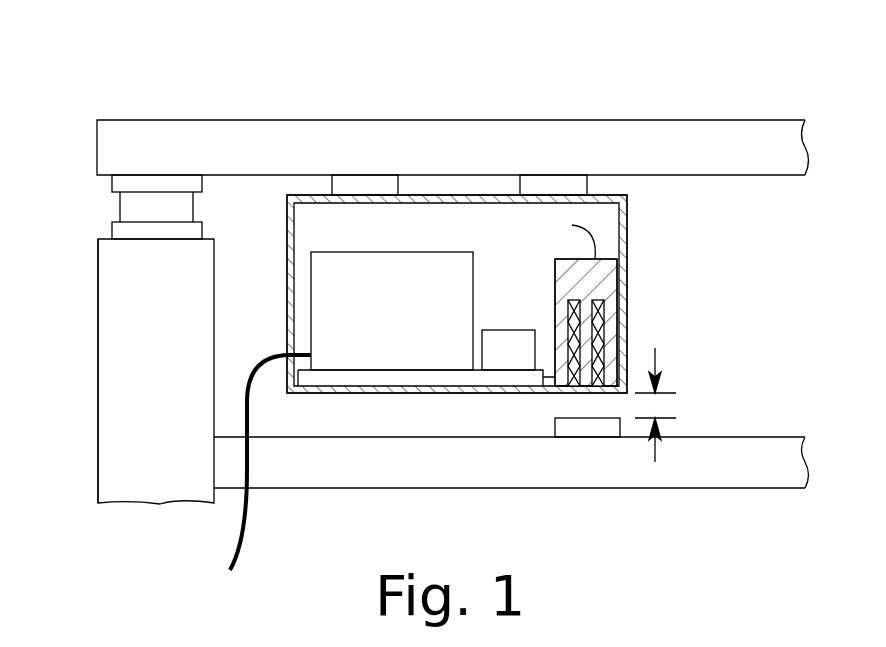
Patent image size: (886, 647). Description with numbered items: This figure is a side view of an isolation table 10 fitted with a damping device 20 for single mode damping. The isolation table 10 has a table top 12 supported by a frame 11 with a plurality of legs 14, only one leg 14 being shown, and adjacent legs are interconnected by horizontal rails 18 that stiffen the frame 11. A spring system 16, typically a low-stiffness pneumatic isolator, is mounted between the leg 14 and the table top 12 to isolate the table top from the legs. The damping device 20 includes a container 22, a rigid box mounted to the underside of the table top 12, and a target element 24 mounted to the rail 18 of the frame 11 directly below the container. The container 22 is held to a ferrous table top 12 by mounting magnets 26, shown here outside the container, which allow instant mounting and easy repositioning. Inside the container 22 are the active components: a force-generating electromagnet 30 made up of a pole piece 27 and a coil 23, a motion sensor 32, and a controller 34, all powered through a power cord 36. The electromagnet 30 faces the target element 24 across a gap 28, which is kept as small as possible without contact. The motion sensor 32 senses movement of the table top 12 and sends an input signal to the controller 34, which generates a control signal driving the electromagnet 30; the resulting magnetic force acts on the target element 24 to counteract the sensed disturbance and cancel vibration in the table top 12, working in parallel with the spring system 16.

The isolation table 10 is at (138, 104).
The frame 11 is at (96, 300).
The table top 12 is at (205, 118).
The leg 14 is at (115, 378).
The spring system 16 is at (132, 209).
The horizontal rail 18 is at (358, 475).
The damping device 20 is at (700, 278).
The container 22 is at (630, 210).
The coil 23 is at (598, 340).
The target element 24 is at (588, 430).
The mounting magnets 26 is at (365, 183).
The pole piece 27 is at (608, 298).
The gap 28 is at (655, 352).
The electromagnet 30 is at (553, 267).
The motion sensor 32 is at (510, 303).
The controller 34 is at (392, 311).
The power cord 36 is at (245, 542).